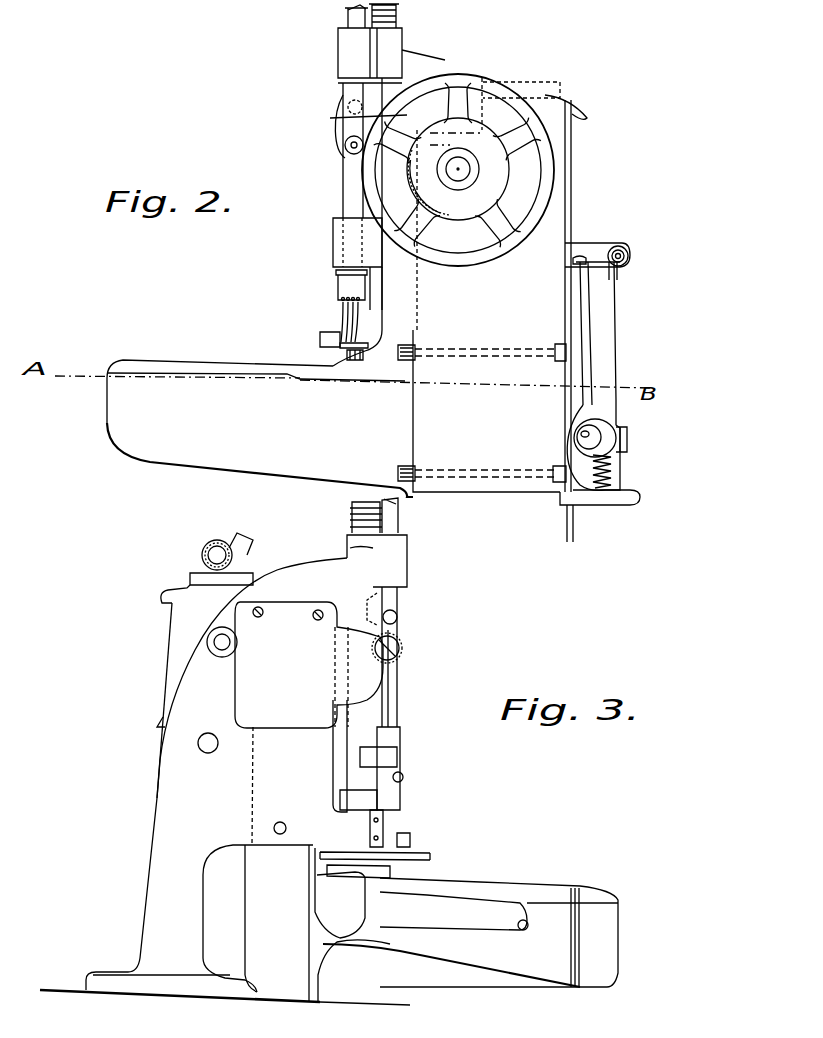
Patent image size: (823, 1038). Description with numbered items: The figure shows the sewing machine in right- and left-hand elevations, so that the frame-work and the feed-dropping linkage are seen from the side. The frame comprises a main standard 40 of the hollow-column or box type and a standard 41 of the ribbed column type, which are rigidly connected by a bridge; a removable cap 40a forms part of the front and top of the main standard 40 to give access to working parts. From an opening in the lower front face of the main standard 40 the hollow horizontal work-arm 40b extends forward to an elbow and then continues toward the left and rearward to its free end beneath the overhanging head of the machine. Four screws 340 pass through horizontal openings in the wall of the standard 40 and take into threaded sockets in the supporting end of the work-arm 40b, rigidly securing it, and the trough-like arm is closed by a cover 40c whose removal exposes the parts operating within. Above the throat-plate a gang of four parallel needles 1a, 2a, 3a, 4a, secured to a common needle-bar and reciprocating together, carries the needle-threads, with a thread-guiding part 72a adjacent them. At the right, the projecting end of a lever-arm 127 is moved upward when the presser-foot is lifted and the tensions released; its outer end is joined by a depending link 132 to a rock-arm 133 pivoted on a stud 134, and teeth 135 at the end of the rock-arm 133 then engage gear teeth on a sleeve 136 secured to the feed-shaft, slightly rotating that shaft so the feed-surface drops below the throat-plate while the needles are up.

In FIG. 2, the main standard 40 is at (486, 273).
In FIG. 2, the cap 40a is at (344, 115).
In FIG. 2, the work-arm 40b is at (191, 457).
In FIG. 3, the work-arm 40b is at (278, 698).
In FIG. 2, the cover 40c is at (200, 360).
In FIG. 3, the cover 40c is at (513, 890).
In FIG. 3, the standard 41 is at (162, 811).
In FIG. 2, the thread guide block 72a is at (338, 273).
In FIG. 2, the needle 1a is at (341, 306).
In FIG. 2, the needle 2a is at (346, 318).
In FIG. 2, the needle 3a is at (351, 330).
In FIG. 2, the needle 4a is at (322, 340).
In FIG. 2, the screws 340 is at (513, 357).
In FIG. 2, the lever-arm 127 is at (598, 248).
In FIG. 2, the link 132 is at (615, 327).
In FIG. 2, the rock-arm 133 is at (612, 468).
In FIG. 2, the stud 134 is at (628, 448).
In FIG. 2, the teeth 135 is at (605, 488).
In FIG. 2, the sleeve 136 is at (597, 438).